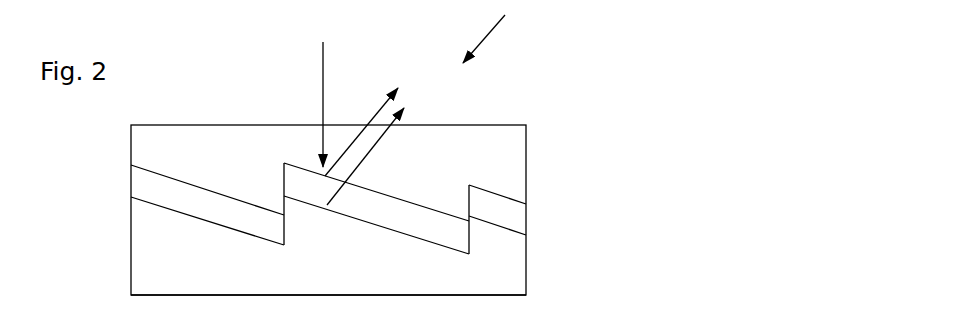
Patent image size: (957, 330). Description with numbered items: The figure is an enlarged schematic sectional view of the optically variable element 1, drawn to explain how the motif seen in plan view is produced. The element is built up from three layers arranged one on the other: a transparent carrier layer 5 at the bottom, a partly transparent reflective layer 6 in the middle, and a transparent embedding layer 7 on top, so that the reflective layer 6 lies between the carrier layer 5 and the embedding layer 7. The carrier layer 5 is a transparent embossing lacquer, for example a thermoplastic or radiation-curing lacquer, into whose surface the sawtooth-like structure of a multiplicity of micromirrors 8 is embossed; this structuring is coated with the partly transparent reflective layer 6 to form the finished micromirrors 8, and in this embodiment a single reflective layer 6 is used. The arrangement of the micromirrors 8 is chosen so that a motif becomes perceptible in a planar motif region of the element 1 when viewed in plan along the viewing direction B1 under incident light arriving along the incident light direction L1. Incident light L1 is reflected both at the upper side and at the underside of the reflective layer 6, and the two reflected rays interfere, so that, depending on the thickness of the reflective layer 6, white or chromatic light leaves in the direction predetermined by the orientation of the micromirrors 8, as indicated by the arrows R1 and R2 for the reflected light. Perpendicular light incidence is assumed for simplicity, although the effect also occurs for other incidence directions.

The optically variable element 1 is at (131, 228).
The transparent carrier layer 5 is at (517, 262).
The partly transparent reflective layer 6 is at (517, 218).
The transparent embedding layer 7 is at (517, 172).
The micromirrors 8 is at (147, 170).
The incident light direction L1 is at (323, 90).
The reflected light R1 is at (375, 118).
The reflected light R2 is at (380, 138).
The viewing direction B1 is at (490, 29).